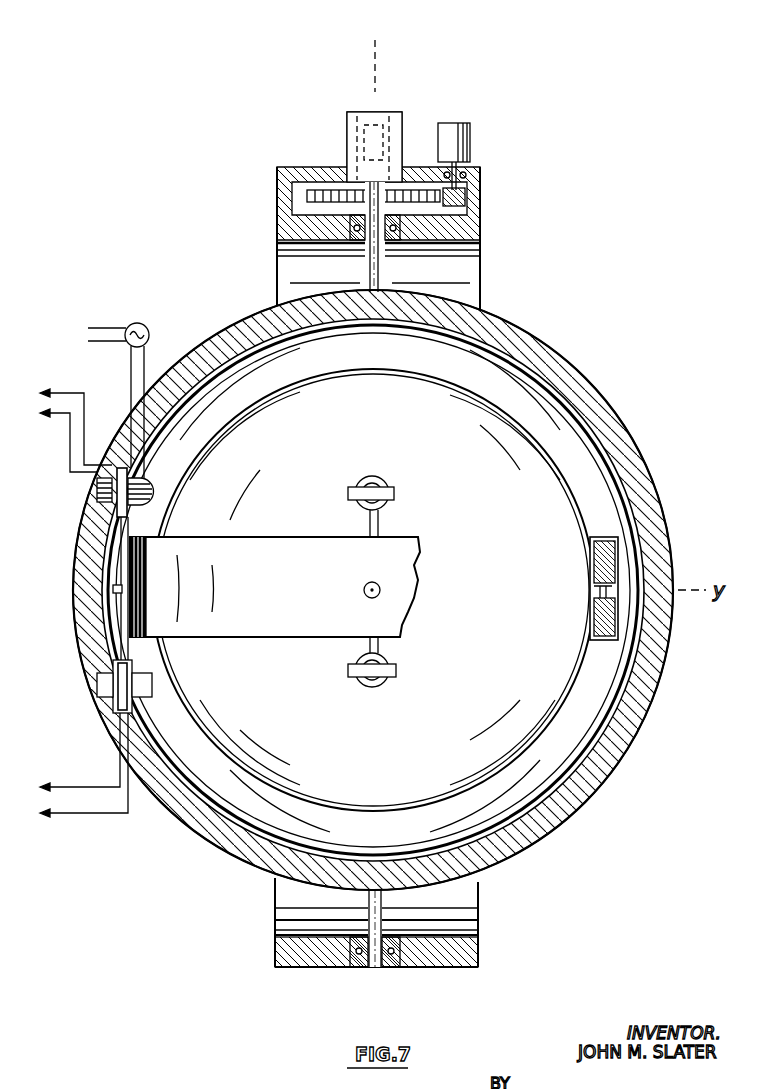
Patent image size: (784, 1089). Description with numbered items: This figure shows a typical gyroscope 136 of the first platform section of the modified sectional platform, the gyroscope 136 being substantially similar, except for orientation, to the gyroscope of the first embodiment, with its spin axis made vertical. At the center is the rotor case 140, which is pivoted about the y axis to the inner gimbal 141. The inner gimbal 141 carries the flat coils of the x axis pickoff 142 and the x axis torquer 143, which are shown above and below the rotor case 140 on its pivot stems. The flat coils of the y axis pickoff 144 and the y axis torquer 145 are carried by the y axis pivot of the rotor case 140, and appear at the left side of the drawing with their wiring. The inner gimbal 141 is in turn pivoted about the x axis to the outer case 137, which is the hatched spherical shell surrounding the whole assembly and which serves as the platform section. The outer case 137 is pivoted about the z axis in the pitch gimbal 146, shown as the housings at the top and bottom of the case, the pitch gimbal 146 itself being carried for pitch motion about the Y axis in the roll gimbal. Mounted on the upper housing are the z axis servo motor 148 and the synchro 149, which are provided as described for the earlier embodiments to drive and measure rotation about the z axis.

The gyroscope 136 is at (510, 857).
The outer case 137 is at (562, 366).
The rotor case 140 is at (214, 730).
The inner gimbal 141 is at (605, 605).
The x axis pickoff 142 is at (395, 493).
The x axis torquer 143 is at (393, 663).
The y axis pickoff 144 is at (148, 485).
The y axis torquer 145 is at (130, 673).
The pitch gimbal 146 is at (478, 949).
The z axis servo motor 148 is at (452, 123).
The synchro 149 is at (366, 113).